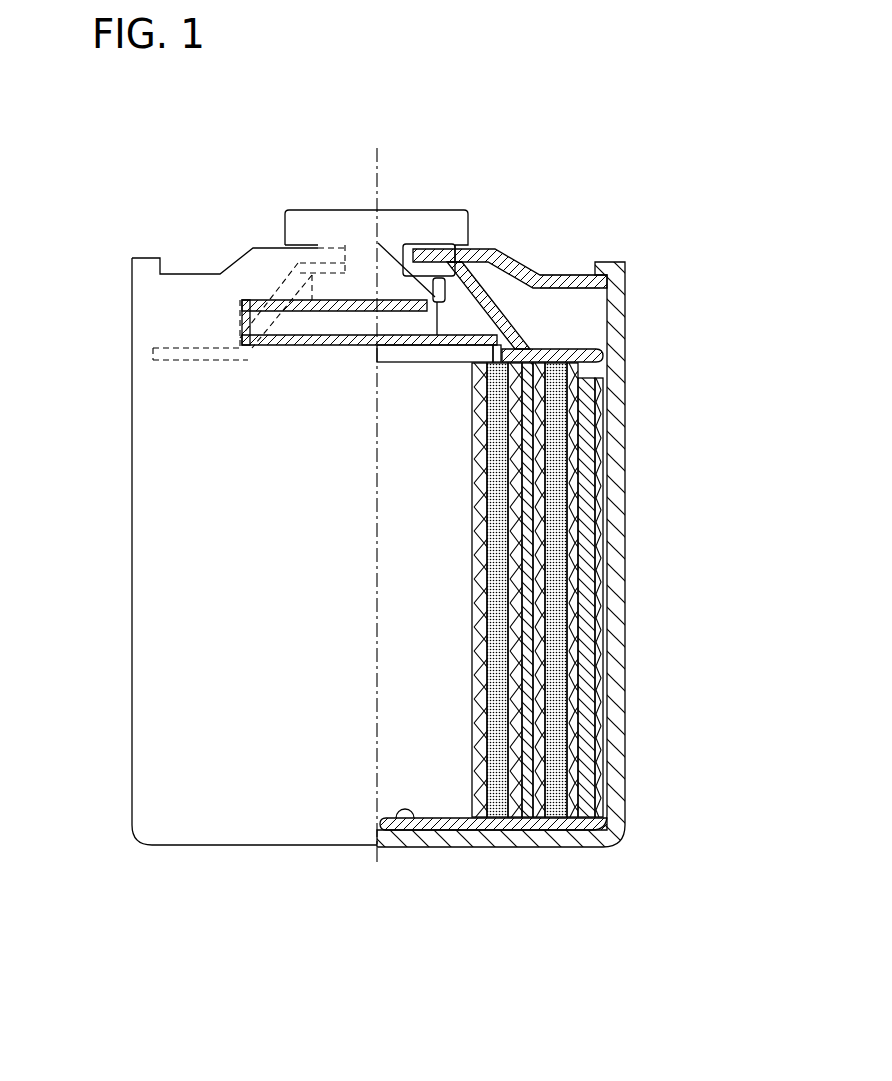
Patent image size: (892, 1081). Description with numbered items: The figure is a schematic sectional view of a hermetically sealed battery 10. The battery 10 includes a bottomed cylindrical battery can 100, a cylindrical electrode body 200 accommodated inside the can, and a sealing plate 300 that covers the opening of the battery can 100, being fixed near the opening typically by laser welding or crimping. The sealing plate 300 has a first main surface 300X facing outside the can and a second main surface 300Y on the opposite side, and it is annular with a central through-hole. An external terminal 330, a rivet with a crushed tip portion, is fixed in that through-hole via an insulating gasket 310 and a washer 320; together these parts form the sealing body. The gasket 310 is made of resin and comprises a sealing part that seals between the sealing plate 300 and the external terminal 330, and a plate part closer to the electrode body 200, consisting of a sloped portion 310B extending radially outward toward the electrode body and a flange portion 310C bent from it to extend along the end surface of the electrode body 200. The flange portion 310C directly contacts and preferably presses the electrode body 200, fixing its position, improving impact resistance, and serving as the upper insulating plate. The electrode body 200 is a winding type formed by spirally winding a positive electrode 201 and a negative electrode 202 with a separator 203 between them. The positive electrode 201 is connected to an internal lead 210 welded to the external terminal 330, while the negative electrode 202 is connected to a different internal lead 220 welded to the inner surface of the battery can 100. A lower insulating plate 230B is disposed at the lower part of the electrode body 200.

The battery 10 is at (623, 154).
The battery can 100 is at (623, 512).
The electrode body 200 is at (719, 538).
The positive electrode 201 is at (603, 653).
The negative electrode 202 is at (608, 612).
The separator 203 is at (610, 580).
The internal lead 210 is at (454, 243).
The internal lead 220 is at (512, 830).
The lower insulating plate 230B is at (410, 823).
The sealing plate 300 is at (497, 247).
The first main surface 300X is at (572, 274).
The second main surface 300Y is at (563, 288).
The gasket 310 is at (403, 257).
The sloped portion 310B is at (497, 331).
The flange portion 310C is at (550, 349).
The washer 320 is at (405, 272).
The external terminal 330 is at (398, 227).